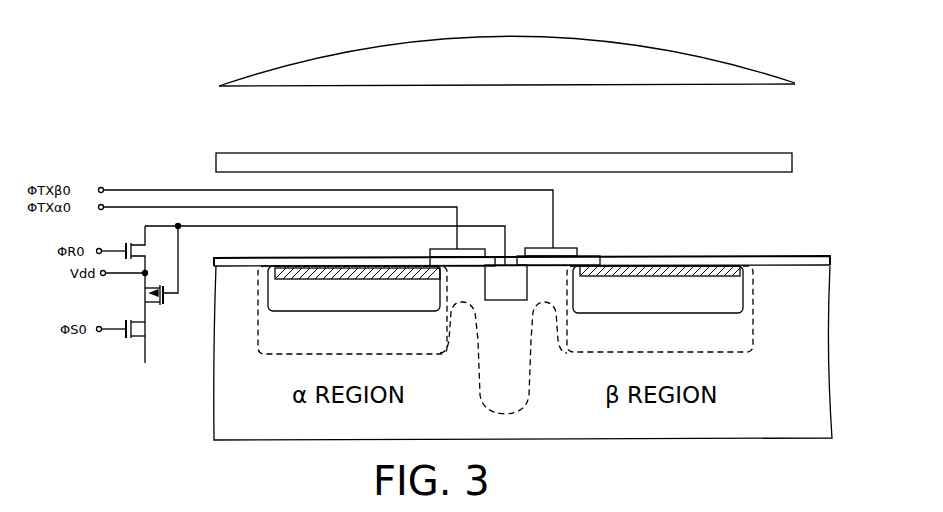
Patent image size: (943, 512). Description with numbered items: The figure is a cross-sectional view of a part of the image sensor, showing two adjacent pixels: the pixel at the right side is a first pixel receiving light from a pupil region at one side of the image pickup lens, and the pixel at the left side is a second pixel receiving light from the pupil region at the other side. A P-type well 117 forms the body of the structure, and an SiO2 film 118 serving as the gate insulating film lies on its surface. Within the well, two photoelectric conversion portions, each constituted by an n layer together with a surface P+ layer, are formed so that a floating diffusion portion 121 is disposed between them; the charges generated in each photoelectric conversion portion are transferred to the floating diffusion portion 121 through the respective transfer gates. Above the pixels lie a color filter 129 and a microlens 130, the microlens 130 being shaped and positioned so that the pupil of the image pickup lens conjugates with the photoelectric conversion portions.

The microlens 130 is at (507, 61).
The color filter 129 is at (504, 149).
The SiO2 film 118 is at (522, 250).
The P-type well 117 is at (523, 353).
The floating diffusion portion 121 is at (503, 339).